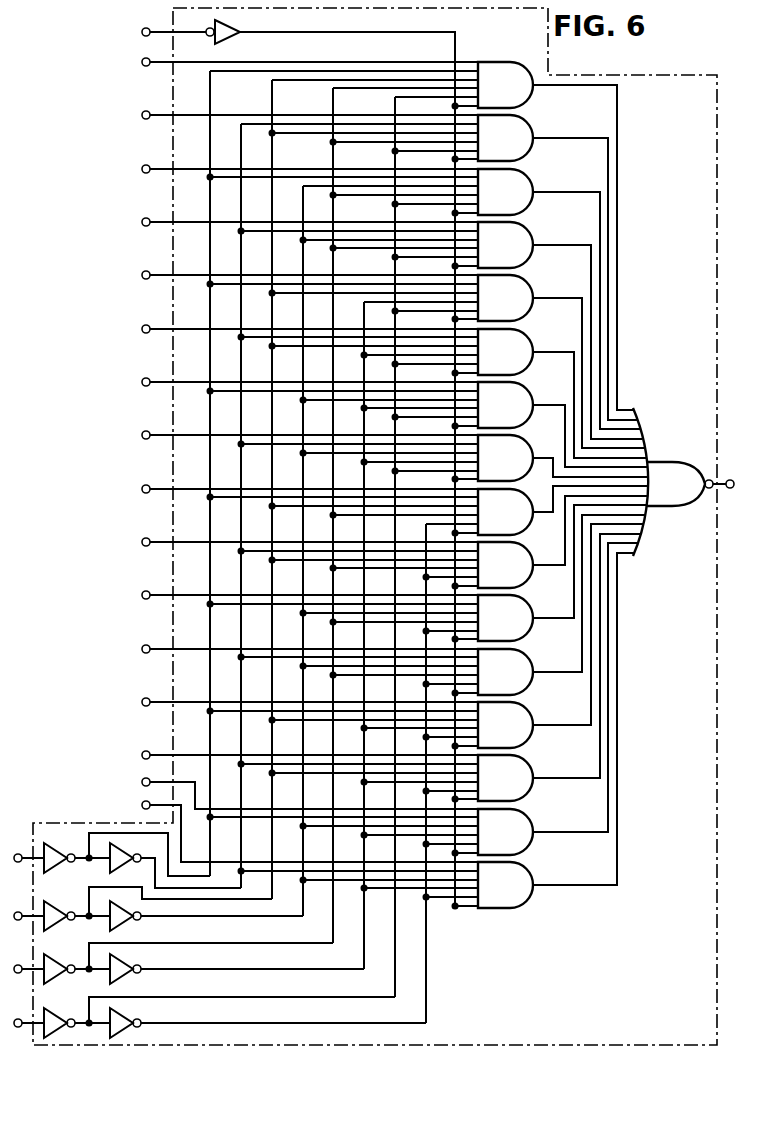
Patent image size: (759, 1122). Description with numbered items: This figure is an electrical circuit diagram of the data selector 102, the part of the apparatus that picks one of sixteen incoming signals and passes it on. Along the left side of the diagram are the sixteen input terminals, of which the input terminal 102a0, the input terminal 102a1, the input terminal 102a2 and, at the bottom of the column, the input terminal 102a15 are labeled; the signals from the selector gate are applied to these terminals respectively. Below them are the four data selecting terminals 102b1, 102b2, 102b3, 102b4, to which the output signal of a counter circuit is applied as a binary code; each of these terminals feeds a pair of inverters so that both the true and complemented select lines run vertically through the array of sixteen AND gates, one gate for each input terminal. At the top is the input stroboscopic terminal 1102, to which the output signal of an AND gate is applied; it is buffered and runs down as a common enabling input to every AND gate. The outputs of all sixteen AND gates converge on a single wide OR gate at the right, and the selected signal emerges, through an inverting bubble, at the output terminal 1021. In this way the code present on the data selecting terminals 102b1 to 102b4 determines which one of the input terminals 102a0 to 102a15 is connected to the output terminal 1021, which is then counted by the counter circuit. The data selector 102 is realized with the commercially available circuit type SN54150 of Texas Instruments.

The data selector 102 is at (653, 72).
The input stroboscopic terminal 1102 is at (142, 32).
The input terminal 102a0 is at (142, 62).
The input terminal 102a1 is at (142, 115).
The input terminal 102a2 is at (142, 169).
The input terminal 102a15 is at (142, 805).
The data selecting terminal 102b1 is at (18, 854).
The data selecting terminal 102b2 is at (18, 912).
The data selecting terminal 102b3 is at (18, 965).
The data selecting terminal 102b4 is at (18, 1019).
The output terminal 1021 is at (712, 489).